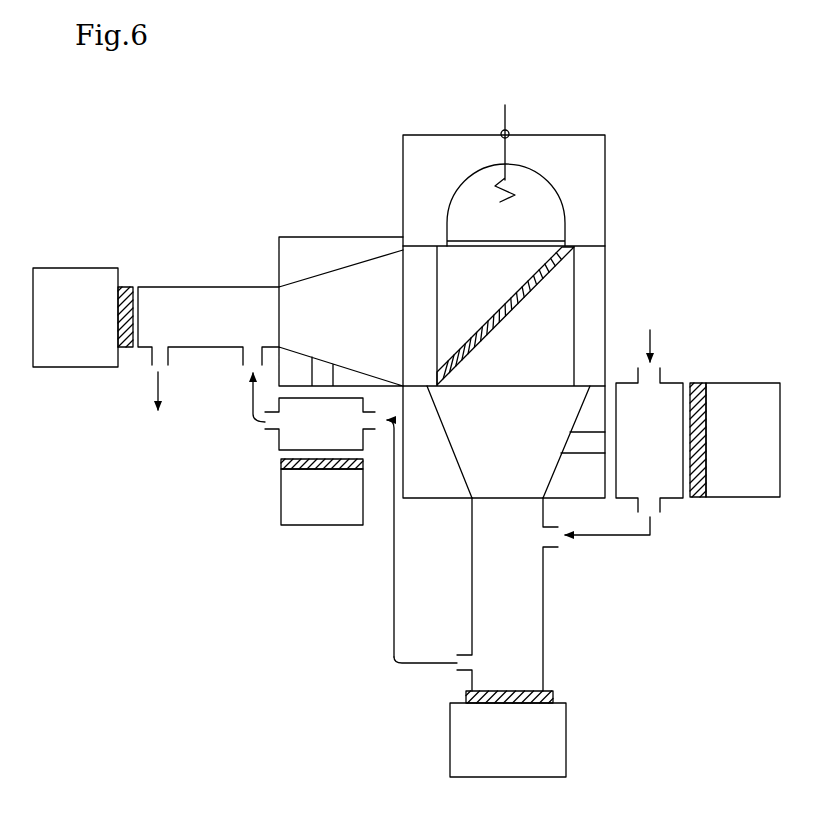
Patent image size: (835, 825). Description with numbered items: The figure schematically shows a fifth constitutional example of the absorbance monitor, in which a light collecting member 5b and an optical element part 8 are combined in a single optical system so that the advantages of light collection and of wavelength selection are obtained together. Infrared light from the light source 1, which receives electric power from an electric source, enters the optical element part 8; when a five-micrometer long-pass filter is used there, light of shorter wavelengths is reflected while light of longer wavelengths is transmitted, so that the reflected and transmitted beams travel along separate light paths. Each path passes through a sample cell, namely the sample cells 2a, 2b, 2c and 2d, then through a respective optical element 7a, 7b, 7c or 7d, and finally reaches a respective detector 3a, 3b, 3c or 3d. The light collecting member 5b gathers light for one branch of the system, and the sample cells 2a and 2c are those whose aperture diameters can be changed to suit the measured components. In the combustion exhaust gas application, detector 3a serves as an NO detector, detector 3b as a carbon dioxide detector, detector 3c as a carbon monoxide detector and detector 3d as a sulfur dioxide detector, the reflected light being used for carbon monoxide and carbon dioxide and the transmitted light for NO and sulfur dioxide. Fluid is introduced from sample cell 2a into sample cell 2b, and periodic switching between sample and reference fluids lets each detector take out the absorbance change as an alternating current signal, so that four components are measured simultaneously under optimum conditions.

The light source 1 is at (605, 201).
The optical element part 8 is at (597, 297).
The light collecting member 5b is at (332, 237).
The sample cell 2a is at (543, 610).
The sample cell 2b is at (279, 444).
The sample cell 2c is at (197, 285).
The sample cell 2d is at (668, 500).
The detector 3a is at (566, 745).
The detector 3b is at (281, 512).
The detector 3c is at (78, 268).
The detector 3d is at (757, 383).
The optical element 7a is at (550, 690).
The optical element 7b is at (281, 463).
The optical element 7c is at (127, 348).
The optical element 7d is at (698, 383).